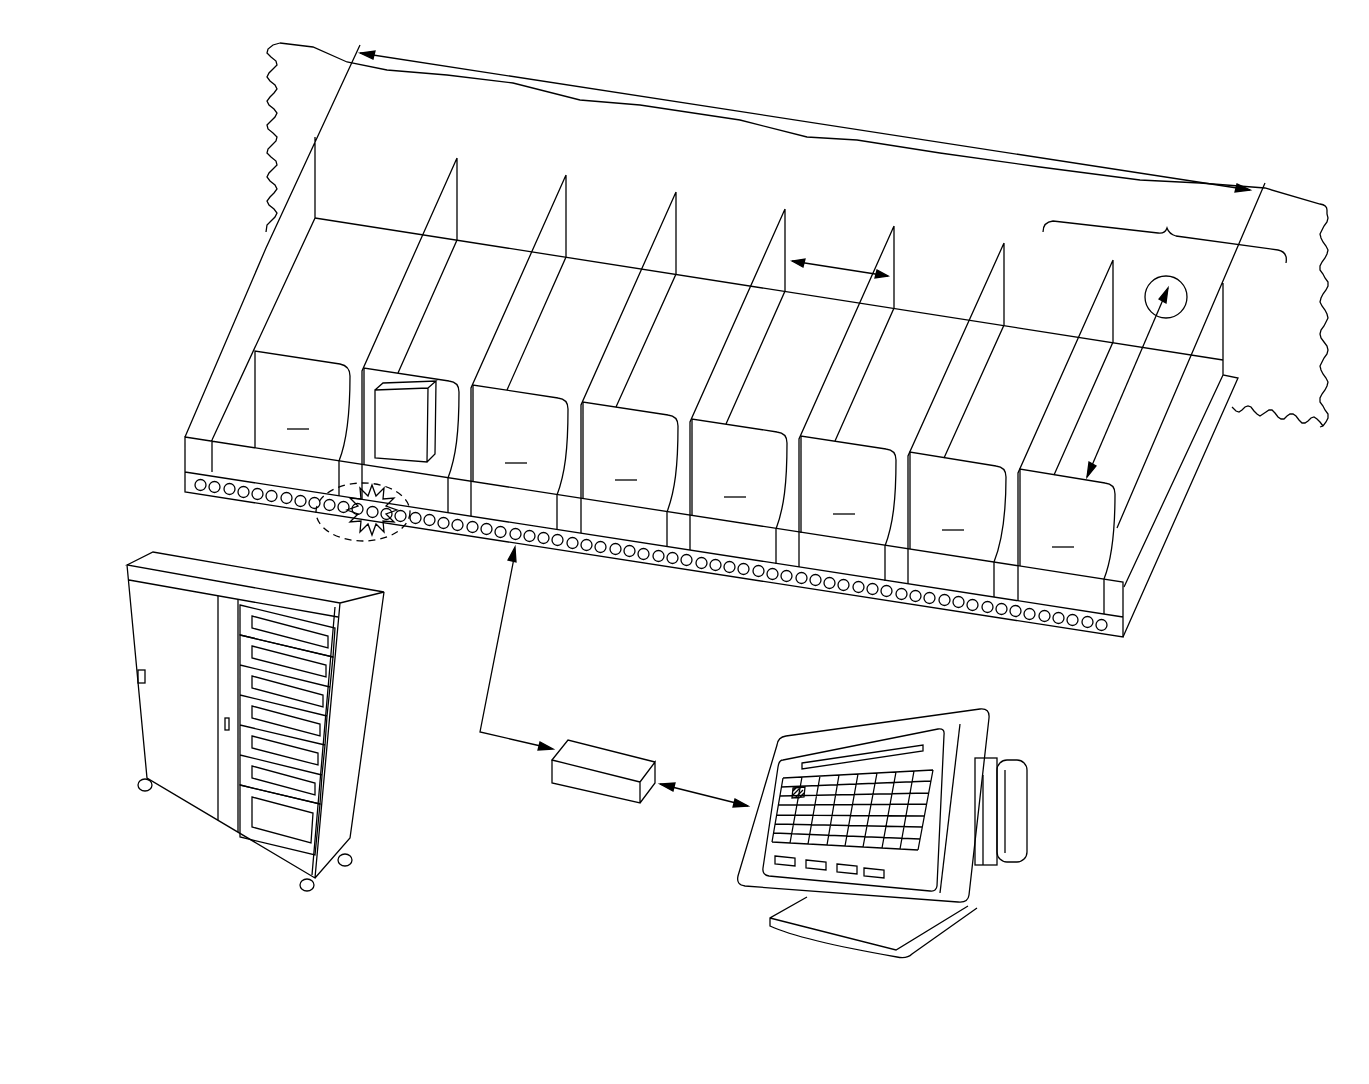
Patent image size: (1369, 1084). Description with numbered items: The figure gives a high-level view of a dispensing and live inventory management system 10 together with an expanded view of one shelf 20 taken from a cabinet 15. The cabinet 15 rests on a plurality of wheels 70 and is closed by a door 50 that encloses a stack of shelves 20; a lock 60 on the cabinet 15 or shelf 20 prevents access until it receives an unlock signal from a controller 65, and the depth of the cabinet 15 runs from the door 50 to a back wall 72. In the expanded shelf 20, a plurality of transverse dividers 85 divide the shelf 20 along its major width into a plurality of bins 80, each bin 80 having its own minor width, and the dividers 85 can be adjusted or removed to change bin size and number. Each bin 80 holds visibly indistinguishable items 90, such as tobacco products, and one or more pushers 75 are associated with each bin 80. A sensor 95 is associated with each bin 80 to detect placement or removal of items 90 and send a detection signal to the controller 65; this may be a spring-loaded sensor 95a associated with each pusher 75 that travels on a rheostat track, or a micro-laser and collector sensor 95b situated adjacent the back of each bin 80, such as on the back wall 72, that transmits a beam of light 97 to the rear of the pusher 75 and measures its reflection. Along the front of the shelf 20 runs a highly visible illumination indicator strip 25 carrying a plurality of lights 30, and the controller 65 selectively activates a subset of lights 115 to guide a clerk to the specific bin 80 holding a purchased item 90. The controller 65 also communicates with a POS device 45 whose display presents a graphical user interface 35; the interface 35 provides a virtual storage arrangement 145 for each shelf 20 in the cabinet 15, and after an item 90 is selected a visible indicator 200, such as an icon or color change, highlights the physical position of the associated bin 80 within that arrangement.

The dispensing and live inventory management (DLIM) system 10 is at (180, 210).
The cabinet 15 is at (127, 592).
The shelf 20 is at (205, 325).
The illumination indicator strip 25 is at (1115, 640).
The lights 30 is at (627, 558).
The graphical user interface (GUI) 35 is at (962, 738).
The POS device 45 is at (878, 806).
The door 50 is at (178, 648).
The lock 60 is at (137, 675).
The controller 65 is at (628, 760).
The wheels 70 is at (140, 784).
The back wall 72 is at (737, 225).
The pusher 75 is at (450, 383).
The bin 80 is at (600, 272).
The transverse divider 85 is at (775, 258).
The item 90 is at (390, 446).
The sensor 95 is at (1164, 229).
The spring-loaded sensor 95a is at (1035, 327).
The micro-laser and collector sensor 95b is at (1150, 280).
The beam of light 97 is at (1133, 373).
The subset of lights 115 is at (392, 533).
The virtual storage arrangement 145 is at (949, 722).
The visible indicator 200 is at (790, 790).